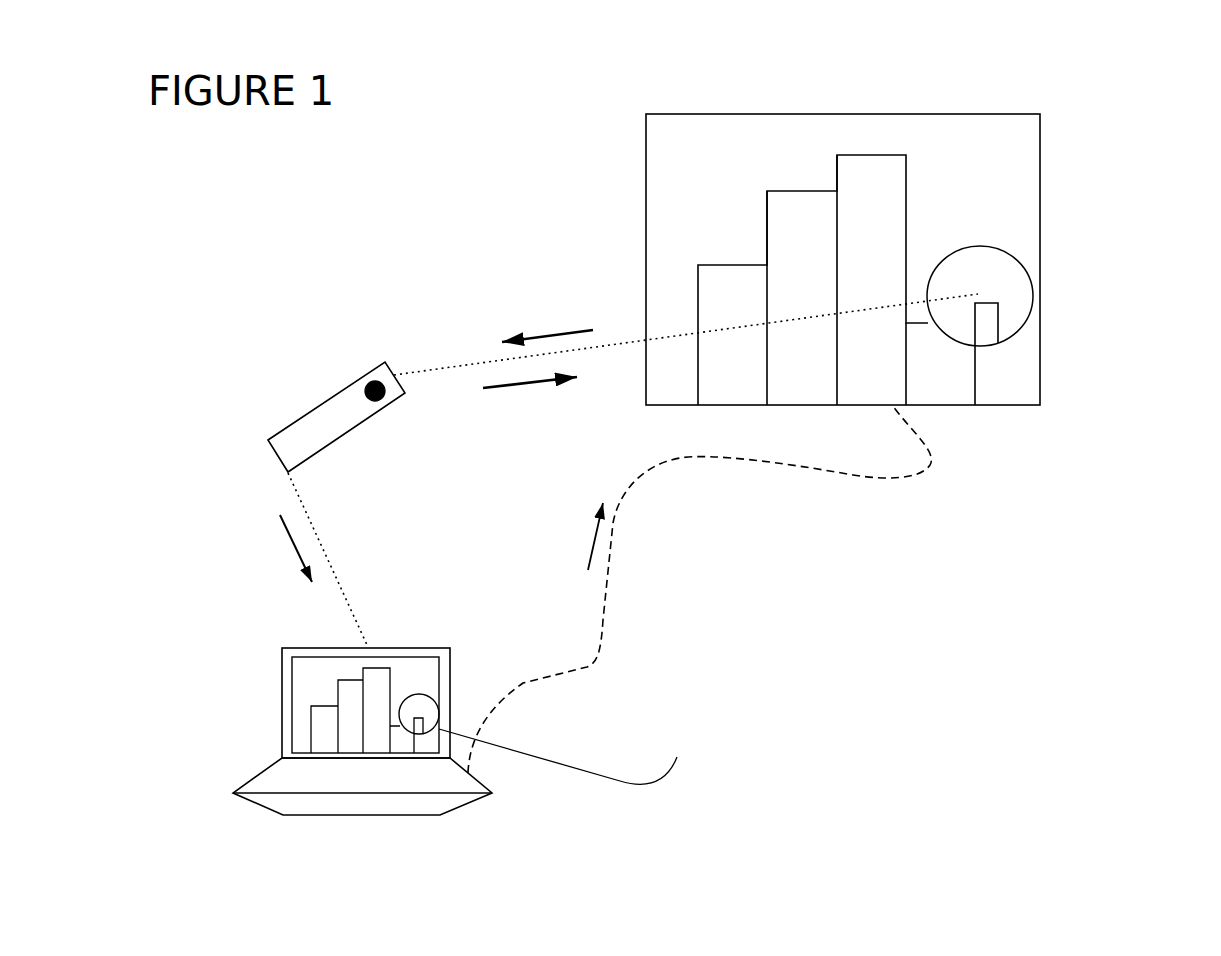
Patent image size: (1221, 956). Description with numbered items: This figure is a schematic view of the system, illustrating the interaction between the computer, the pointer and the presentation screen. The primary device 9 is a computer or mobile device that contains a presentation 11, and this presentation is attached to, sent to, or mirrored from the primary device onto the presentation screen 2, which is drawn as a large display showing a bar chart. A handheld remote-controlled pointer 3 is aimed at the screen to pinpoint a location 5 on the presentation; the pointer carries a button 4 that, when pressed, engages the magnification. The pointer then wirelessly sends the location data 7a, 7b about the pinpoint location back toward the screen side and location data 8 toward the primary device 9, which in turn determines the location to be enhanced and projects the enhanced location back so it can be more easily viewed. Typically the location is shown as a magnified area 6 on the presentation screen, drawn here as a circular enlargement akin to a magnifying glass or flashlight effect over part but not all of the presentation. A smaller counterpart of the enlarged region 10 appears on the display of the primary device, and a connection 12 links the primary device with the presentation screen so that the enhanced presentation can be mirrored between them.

The presentation screen 2 is at (975, 112).
The pointer 3 is at (320, 405).
The button 4 is at (370, 382).
The pinpoint location 5 is at (982, 295).
The magnified area 6 is at (1033, 293).
The location data 7a is at (686, 331).
The location data 7b is at (530, 401).
The location data 8 is at (327, 555).
The primary device 9 is at (282, 693).
The NAT application on computer 10 is at (427, 697).
The presentation 11 is at (568, 751).
The network connection 12 is at (680, 459).